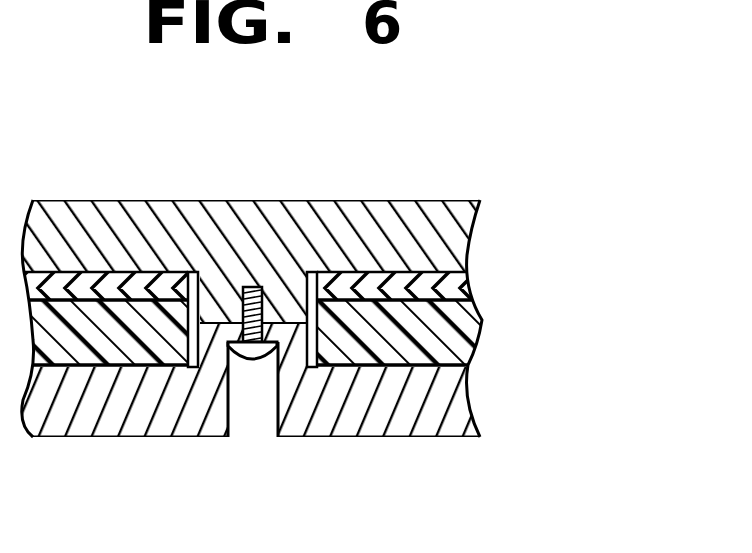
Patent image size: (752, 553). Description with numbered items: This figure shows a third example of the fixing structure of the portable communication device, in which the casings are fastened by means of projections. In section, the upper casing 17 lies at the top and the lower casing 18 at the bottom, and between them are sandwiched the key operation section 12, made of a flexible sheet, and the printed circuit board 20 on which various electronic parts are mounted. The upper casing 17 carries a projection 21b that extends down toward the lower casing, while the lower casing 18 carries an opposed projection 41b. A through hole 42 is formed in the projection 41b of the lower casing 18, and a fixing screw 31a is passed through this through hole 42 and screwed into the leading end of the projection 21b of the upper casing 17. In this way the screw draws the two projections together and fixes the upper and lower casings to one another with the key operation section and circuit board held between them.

The upper casing 17 is at (332, 212).
The key operation section 12 is at (432, 285).
The printed circuit board 20 is at (440, 328).
The lower casing 18 is at (408, 398).
The projection 21b is at (225, 305).
The projection 41b is at (226, 345).
The through hole 42 is at (278, 415).
The fixing screw 31a is at (255, 358).